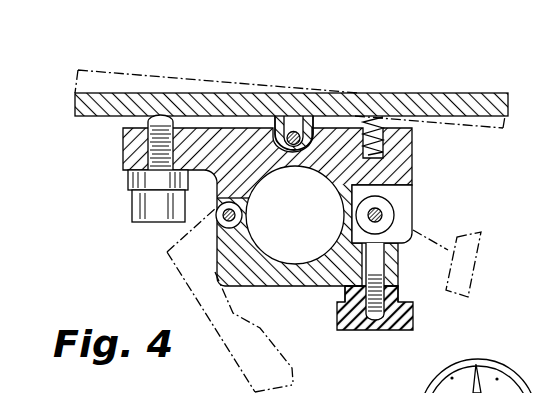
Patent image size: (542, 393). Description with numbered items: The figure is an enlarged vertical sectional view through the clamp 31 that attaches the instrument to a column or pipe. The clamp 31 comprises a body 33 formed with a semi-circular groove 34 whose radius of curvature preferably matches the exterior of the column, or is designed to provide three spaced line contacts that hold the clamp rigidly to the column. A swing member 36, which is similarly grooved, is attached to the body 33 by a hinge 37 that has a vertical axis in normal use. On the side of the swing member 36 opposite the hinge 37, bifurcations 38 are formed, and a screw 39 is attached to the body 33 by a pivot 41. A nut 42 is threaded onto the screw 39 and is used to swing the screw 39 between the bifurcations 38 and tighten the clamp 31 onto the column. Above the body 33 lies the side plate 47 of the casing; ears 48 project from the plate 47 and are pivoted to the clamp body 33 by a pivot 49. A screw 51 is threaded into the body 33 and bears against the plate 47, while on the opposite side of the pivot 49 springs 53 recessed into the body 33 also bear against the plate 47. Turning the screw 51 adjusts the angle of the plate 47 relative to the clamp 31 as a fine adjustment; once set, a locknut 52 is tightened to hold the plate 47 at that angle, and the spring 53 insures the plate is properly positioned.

The clamp 31 is at (430, 179).
The body 33 is at (413, 150).
The semi-circular groove 34 is at (264, 171).
The swing member 36 is at (282, 288).
The hinge 37 is at (221, 223).
The bifurcations 38 is at (396, 283).
The screw 39 is at (384, 257).
The pivot 41 is at (381, 212).
The nut 42 is at (413, 329).
The side plate 47 is at (424, 93).
The ears 48 is at (273, 114).
The pivot 49 is at (291, 131).
The screw 51 is at (150, 143).
The locknut 52 is at (128, 185).
The springs 53 is at (353, 124).